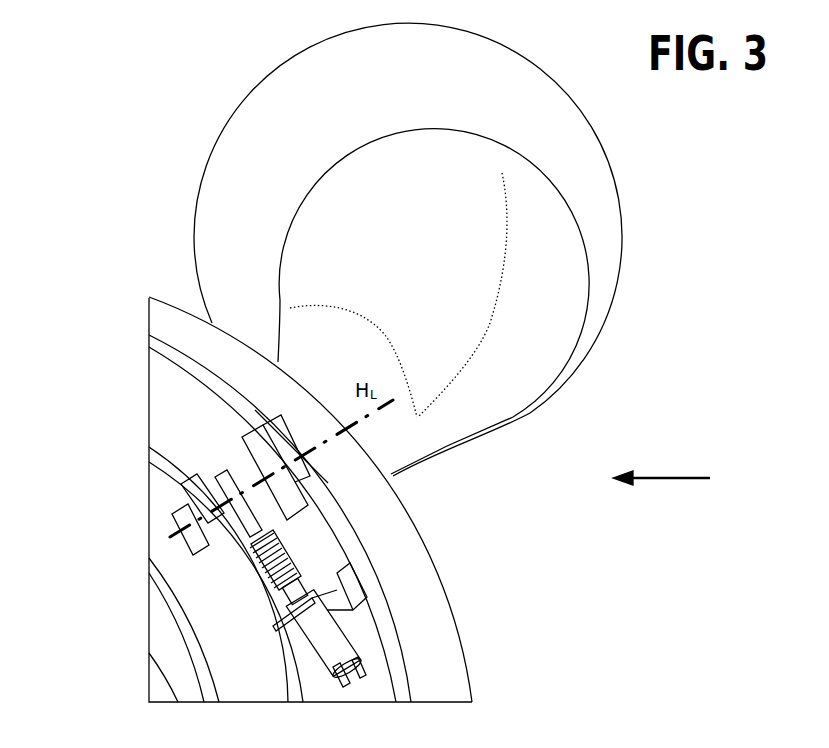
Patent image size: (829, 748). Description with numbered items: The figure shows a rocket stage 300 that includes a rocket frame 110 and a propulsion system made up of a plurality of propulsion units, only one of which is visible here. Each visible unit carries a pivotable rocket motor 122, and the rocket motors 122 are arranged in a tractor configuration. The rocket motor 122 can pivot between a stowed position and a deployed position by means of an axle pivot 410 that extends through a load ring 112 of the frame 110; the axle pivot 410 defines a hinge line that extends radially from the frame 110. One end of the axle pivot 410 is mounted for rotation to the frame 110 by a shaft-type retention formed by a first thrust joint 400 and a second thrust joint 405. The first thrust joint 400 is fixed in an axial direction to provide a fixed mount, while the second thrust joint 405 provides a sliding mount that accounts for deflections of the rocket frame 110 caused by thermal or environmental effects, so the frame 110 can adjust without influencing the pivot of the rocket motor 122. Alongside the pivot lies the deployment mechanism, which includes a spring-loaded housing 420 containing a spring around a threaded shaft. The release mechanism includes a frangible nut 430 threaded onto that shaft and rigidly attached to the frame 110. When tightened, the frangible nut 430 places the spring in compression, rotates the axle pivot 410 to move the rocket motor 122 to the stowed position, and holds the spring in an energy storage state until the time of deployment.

The rocket frame 110 is at (149, 388).
The load ring 112 is at (148, 313).
The pivotable rocket motor 122 is at (610, 183).
The rocket stage 300 is at (683, 480).
The first thrust joint 400 is at (192, 487).
The second thrust joint 405 is at (242, 440).
The axle pivot 410 is at (177, 517).
The spring-loaded housing 420 is at (290, 557).
The frangible nut 430 is at (347, 632).